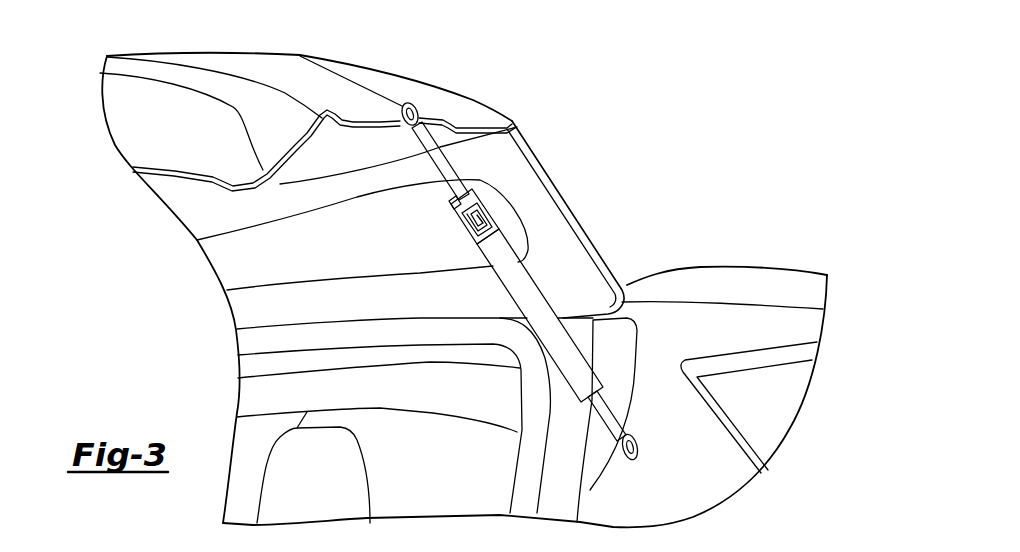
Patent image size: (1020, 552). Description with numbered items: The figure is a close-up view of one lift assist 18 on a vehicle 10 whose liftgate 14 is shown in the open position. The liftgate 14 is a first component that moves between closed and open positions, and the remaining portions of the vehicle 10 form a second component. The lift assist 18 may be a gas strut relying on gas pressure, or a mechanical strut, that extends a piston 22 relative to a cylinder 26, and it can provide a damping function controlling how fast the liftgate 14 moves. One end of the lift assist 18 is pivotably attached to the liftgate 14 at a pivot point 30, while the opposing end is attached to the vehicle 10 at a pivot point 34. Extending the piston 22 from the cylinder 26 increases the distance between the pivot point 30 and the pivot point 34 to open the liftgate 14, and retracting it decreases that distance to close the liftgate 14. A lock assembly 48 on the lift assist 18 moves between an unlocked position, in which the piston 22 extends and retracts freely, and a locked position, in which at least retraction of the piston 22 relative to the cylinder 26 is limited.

The vehicle 10 is at (661, 195).
The liftgate 14 is at (445, 97).
The lift assist 18 is at (527, 263).
The piston 22 is at (445, 170).
The cylinder 26 is at (540, 303).
The pivot point 30 is at (403, 112).
The pivot point 34 is at (637, 446).
The lock assembly 48 is at (467, 235).